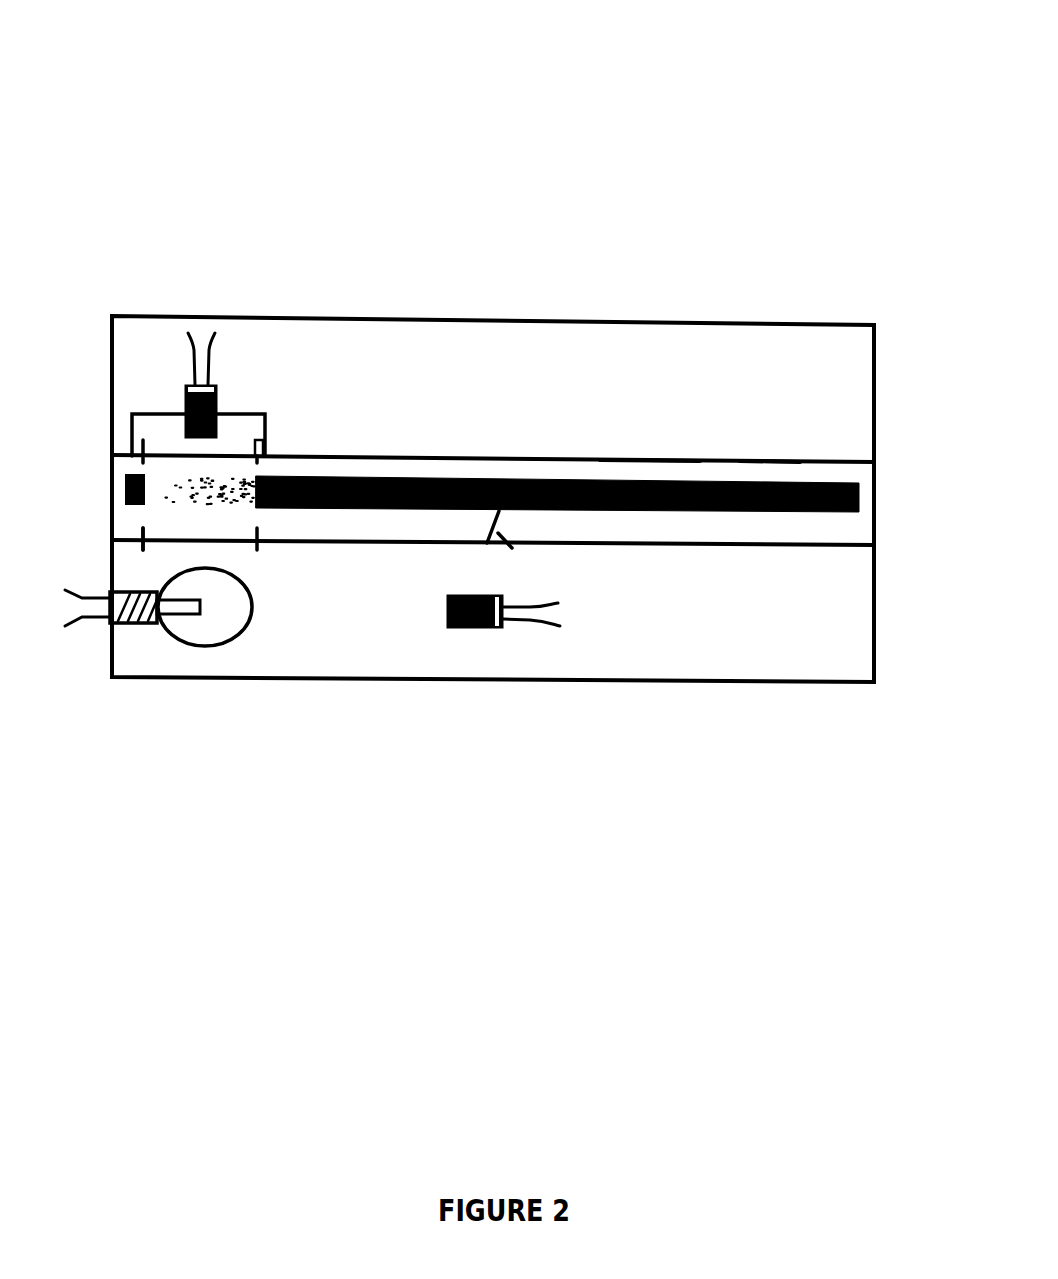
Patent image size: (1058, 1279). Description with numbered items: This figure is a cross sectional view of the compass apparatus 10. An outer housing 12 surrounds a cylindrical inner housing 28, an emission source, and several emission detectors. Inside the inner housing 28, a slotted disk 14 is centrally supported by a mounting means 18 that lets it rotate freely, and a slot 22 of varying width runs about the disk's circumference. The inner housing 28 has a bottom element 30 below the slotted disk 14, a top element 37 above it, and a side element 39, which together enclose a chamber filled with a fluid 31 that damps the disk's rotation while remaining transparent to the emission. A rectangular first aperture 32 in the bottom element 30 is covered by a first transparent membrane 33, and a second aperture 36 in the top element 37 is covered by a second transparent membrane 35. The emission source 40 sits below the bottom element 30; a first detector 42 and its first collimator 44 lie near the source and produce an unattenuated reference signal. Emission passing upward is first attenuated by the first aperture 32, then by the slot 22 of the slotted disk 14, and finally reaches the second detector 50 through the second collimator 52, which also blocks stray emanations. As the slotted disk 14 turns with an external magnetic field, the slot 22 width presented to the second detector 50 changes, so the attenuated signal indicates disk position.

The compass apparatus 10 is at (297, 116).
The housing 12 is at (602, 682).
The slotted disk 14 is at (700, 509).
The mounting means 18 is at (499, 511).
The slot 22 is at (172, 492).
The cylindrical inner housing 28 is at (764, 462).
The bottom element 30 is at (445, 542).
The fluid 31 is at (642, 465).
The first aperture 32 is at (257, 545).
The first transparent membrane 33 is at (228, 543).
The second transparent membrane 35 is at (172, 452).
The second aperture 36 is at (264, 448).
The top element 37 is at (540, 460).
The side element 39 is at (874, 506).
The emission source 40 is at (208, 646).
The first detector 42 is at (497, 628).
The first collimator 44 is at (468, 628).
The second detector 50 is at (214, 390).
The second collimator 52 is at (216, 402).